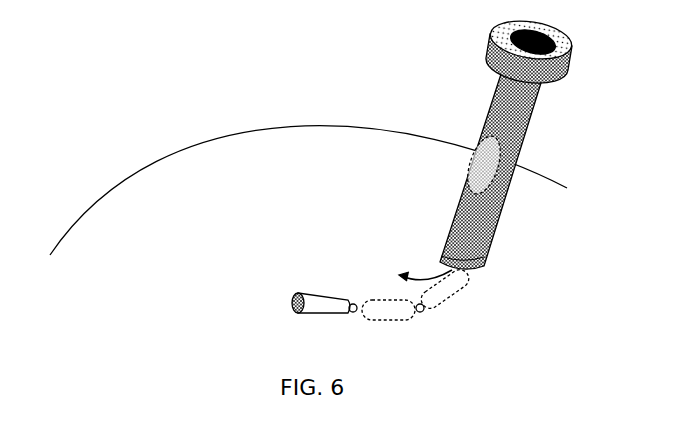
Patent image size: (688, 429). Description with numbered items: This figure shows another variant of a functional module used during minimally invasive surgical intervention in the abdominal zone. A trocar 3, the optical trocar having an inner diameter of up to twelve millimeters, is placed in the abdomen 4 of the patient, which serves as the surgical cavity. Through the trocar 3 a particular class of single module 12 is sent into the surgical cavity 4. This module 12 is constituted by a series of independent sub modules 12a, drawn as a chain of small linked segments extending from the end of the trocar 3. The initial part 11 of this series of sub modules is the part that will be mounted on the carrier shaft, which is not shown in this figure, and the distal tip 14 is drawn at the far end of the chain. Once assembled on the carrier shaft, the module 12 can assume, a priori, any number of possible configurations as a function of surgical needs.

The trocar 3 is at (535, 55).
The abdomen 4 is at (303, 190).
The initial part 11 is at (298, 320).
The single module 12 is at (482, 120).
The independent sub modules 12a is at (458, 302).
The distal tip 14 is at (288, 304).